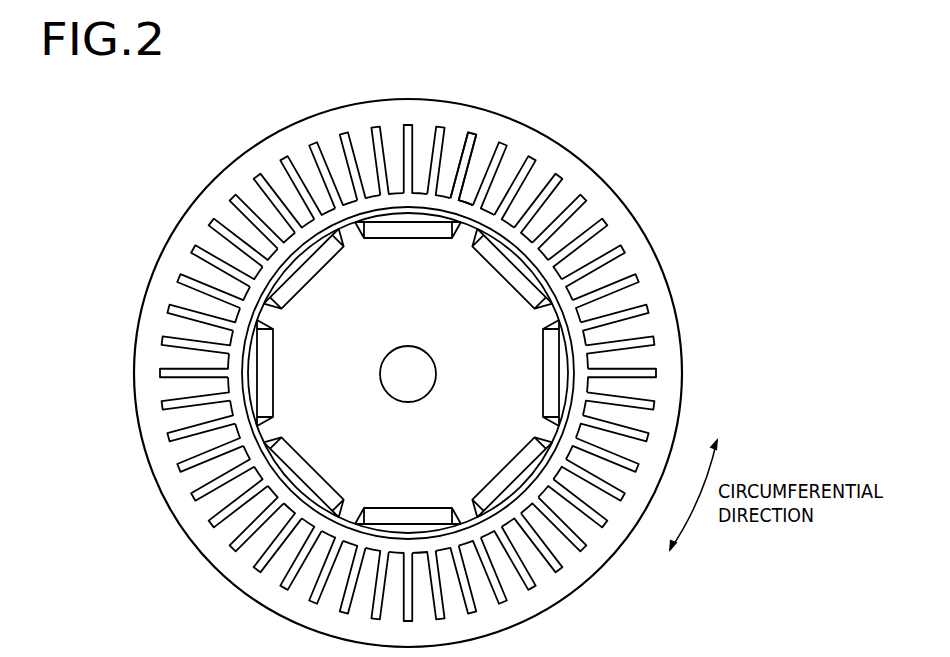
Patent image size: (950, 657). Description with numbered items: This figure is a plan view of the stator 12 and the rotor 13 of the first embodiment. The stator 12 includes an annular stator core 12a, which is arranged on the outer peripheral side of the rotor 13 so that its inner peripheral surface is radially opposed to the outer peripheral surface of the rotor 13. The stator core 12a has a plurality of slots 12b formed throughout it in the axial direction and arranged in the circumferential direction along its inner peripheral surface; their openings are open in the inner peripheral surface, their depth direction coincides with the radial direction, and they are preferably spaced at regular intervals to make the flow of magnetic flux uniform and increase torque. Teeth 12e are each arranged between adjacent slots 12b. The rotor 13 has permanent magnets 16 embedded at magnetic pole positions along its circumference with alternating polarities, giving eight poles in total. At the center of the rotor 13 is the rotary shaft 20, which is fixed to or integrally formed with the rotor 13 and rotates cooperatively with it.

The stator 12 is at (397, 340).
The stator core 12a is at (296, 141).
The slots 12b is at (455, 285).
The teeth 12e is at (466, 205).
The rotor 13 is at (442, 323).
The permanent magnets 16 is at (413, 227).
The rotary shaft 20 is at (407, 375).